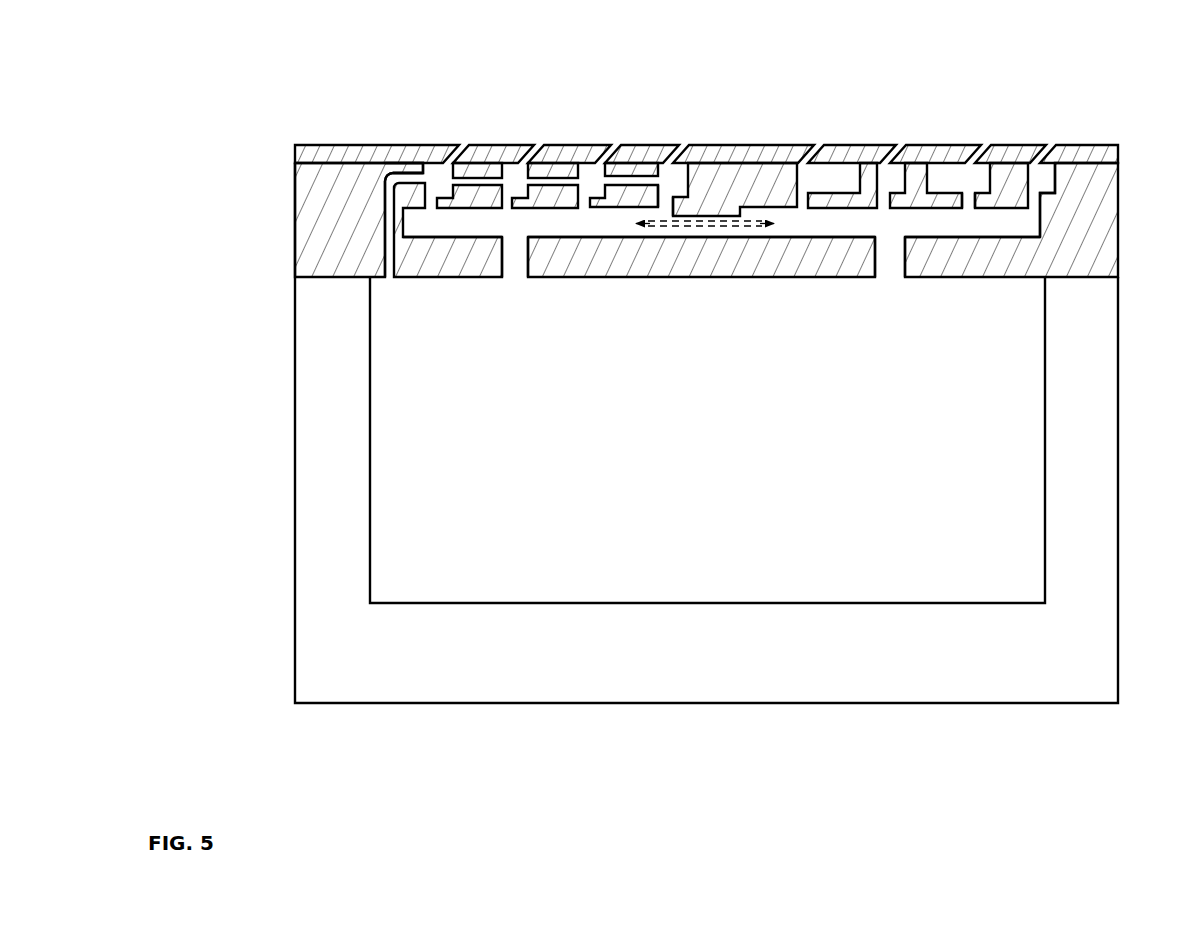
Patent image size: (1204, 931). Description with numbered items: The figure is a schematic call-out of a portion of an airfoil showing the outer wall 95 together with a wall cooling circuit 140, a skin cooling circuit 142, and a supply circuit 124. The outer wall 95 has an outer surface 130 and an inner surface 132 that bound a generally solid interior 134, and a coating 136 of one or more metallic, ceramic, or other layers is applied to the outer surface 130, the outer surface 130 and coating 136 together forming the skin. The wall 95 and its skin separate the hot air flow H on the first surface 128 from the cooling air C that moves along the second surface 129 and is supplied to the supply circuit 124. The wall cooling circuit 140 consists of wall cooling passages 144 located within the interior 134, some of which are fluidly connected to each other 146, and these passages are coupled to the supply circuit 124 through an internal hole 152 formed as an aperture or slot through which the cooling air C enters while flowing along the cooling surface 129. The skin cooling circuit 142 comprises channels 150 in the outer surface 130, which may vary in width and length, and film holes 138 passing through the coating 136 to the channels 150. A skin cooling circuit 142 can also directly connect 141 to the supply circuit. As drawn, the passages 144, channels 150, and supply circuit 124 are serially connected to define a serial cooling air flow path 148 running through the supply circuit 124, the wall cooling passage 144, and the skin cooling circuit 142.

The outer wall 95 is at (1054, 192).
The supply circuit 124 is at (662, 450).
The first surface 128 is at (744, 124).
The second surface 129 is at (655, 279).
The outer surface 130 is at (1119, 157).
The inner surface 132 is at (1119, 277).
The interior 134 is at (346, 231).
The coating 136 is at (364, 179).
The film hole 138 is at (456, 162).
The wall cooling circuit 140 is at (1052, 220).
The direct connection 141 is at (387, 265).
The skin cooling circuit 142 is at (345, 168).
The wall cooling passage 144 is at (462, 220).
The fluid connection between wall cooling passages 146 is at (729, 221).
The serial cooling air flow path 148 is at (276, 224).
The channel 150 is at (673, 177).
The internal hole 152 is at (519, 258).
The cooling air C is at (525, 284).
The hot air flow H is at (640, 122).